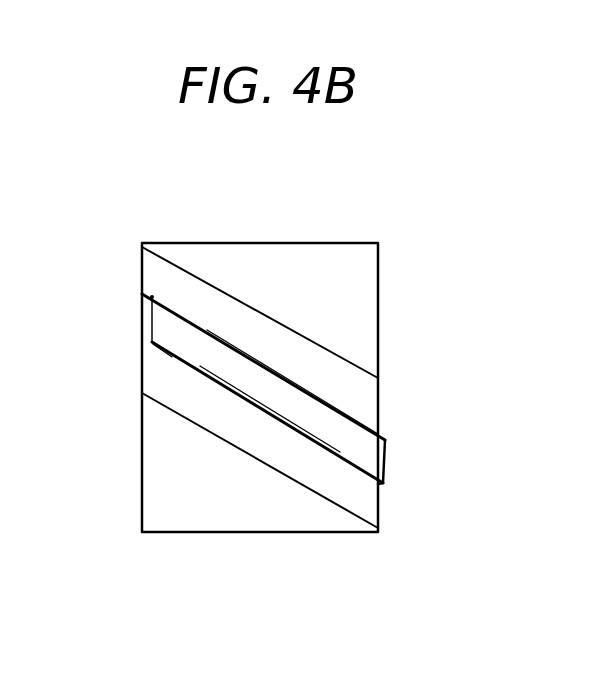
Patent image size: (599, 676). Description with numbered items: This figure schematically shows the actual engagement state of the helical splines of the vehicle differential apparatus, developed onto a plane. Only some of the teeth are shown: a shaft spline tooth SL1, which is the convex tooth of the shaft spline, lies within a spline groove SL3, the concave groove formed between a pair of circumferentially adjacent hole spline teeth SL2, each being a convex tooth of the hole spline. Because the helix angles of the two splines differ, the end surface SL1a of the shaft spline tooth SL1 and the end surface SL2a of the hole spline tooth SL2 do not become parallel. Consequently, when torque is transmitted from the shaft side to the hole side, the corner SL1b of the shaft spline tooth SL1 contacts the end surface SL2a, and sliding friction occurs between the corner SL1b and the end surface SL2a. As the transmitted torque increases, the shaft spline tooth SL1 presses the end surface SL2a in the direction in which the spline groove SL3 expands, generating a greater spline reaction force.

The shaft spline tooth SL1 is at (376, 458).
The end surface of shaft spline tooth SL1a is at (297, 388).
The corner of shaft spline tooth SL1b is at (152, 297).
The hole spline tooth SL2 is at (372, 397).
The end surface of hole spline tooth SL2a is at (280, 382).
The spline groove SL3 is at (150, 345).